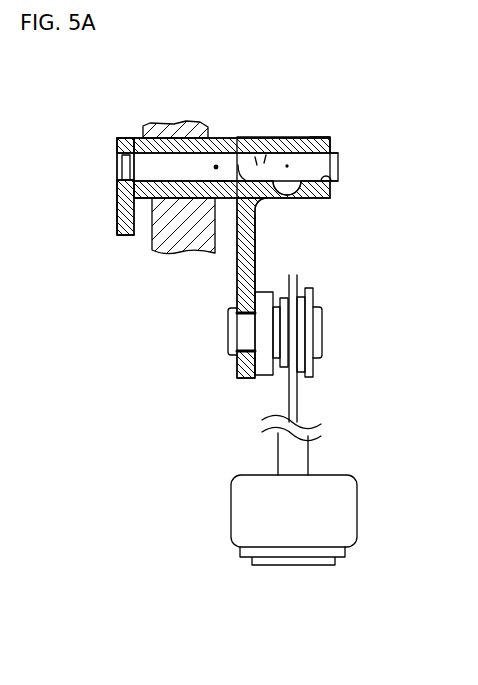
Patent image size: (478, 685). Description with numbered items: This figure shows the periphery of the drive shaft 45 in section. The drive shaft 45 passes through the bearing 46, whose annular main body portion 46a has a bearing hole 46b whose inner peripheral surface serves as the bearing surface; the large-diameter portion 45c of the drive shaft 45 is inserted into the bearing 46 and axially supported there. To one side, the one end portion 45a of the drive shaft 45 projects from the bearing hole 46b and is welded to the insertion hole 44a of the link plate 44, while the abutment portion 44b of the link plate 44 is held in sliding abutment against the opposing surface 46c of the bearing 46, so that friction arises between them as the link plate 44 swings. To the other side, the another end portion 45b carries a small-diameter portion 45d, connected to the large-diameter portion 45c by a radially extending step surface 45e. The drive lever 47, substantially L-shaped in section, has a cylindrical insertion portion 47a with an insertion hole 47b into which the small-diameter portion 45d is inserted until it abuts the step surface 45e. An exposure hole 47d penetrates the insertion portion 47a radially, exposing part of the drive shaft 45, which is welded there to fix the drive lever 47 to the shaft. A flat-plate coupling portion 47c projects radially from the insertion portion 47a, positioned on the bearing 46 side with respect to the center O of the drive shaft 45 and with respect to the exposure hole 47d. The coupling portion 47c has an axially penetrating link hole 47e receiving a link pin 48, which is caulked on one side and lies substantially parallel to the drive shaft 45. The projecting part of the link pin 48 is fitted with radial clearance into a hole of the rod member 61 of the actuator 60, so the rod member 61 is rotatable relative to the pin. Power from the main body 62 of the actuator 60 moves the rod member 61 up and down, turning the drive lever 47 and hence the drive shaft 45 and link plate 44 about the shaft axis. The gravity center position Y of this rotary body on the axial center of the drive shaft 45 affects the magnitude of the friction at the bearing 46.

The link plate 44 is at (117, 142).
The insertion hole 44a is at (114, 180).
The abutment portion 44b is at (115, 216).
The drive shaft 45 is at (250, 137).
The one end portion 45a is at (119, 170).
The another end portion 45b is at (338, 160).
The large-diameter portion 45c is at (172, 162).
The small-diameter portion 45d is at (260, 137).
The step surface 45e is at (216, 170).
The bearing 46 is at (130, 236).
The main body portion 46a is at (140, 200).
The bearing hole 46b is at (140, 140).
The opposing surface 46c is at (115, 140).
The drive lever 47 is at (305, 137).
The insertion portion 47a is at (320, 137).
The insertion hole 47b is at (331, 182).
The coupling portion 47c is at (258, 252).
The exposure hole 47d is at (284, 194).
The link hole 47e is at (240, 352).
The link pin 48 is at (247, 332).
The actuator 60 is at (364, 430).
The rod member 61 is at (293, 278).
The main body 62 is at (292, 566).
The gravity center position Y is at (180, 255).
The center O is at (287, 166).